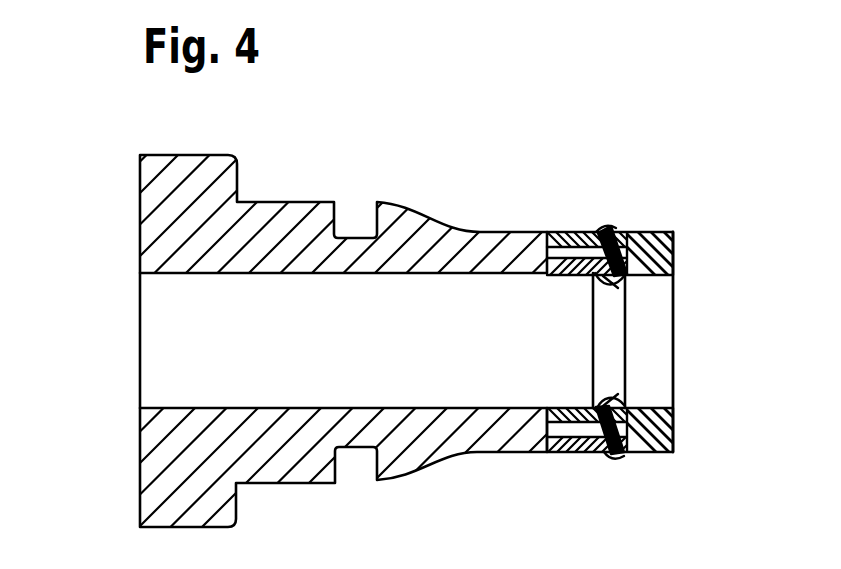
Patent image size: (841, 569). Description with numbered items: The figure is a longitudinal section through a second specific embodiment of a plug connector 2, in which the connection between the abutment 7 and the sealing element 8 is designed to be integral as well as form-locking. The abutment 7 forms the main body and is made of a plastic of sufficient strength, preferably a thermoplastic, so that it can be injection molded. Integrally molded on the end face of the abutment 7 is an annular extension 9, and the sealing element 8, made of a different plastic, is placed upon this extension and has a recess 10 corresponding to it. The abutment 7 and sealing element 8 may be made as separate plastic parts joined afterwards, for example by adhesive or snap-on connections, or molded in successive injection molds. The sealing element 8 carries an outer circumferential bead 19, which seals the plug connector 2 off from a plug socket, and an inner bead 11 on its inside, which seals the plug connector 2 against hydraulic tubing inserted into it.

The plug connector 2 is at (96, 469).
The abutment 7 is at (430, 443).
The sealing element 8 is at (660, 422).
The annular extension 9 is at (640, 251).
The recess 10 is at (573, 437).
The inner bead 11 is at (607, 286).
The outer circumferential bead 19 is at (613, 226).